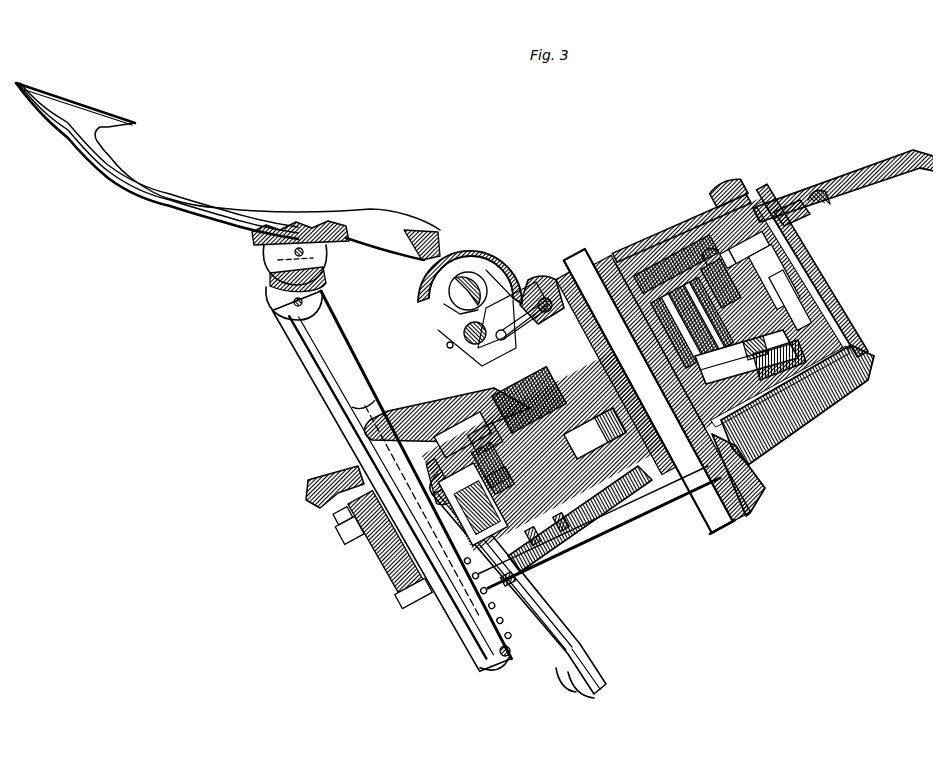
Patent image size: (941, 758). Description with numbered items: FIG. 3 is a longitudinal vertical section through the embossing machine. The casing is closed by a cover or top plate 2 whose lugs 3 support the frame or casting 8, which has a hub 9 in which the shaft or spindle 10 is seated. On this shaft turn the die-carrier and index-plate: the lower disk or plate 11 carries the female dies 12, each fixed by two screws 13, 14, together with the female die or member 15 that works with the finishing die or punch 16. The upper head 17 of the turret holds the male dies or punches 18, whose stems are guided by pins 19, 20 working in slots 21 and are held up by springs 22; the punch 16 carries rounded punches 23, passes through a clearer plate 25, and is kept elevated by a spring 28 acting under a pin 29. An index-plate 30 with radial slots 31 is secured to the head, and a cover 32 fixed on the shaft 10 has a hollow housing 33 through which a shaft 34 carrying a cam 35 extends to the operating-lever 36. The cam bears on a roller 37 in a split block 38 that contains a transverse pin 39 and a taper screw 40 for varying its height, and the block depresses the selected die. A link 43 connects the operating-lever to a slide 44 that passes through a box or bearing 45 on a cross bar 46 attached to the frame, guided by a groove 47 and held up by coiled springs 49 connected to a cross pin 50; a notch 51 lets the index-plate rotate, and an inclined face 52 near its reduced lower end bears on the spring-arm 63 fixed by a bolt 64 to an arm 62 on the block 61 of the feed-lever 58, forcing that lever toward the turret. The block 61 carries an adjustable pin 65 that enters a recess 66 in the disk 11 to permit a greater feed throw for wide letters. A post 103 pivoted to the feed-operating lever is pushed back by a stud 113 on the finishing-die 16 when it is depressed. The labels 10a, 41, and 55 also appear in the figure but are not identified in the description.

The cover or top plate 2 is at (908, 146).
The lugs 3 is at (822, 288).
The frame or casting 8 is at (800, 404).
The hub 9 is at (742, 486).
The shaft or spindle 10 is at (700, 524).
The block 10a is at (485, 438).
The disk or plate 11 is at (745, 364).
The female dies 12 is at (543, 451).
The screw 13 is at (570, 500).
The screw 14 is at (512, 466).
The female die or member 15 is at (778, 352).
The die or punch 16 is at (744, 276).
The upper portion or head of the turret 17 is at (720, 348).
The male dies or punches 18 is at (662, 254).
The pins 19 is at (461, 435).
The pins 20 is at (447, 406).
The slots or openings 21 is at (529, 400).
The springs 22 is at (610, 425).
The rounded pins or punches 23 is at (730, 328).
The plate 25 is at (760, 298).
The spring 28 is at (721, 283).
The pin 29 is at (700, 282).
The index-plate 30 is at (790, 192).
The radial slots 31 is at (380, 430).
The cover 32 is at (724, 206).
The hollow housing or projection 33 is at (462, 234).
The shaft 34 is at (470, 270).
The cam 35 is at (450, 304).
The operating-lever 36 is at (228, 171).
The roller 37 is at (440, 339).
The block 38 is at (534, 284).
The transversely-extending pin 39 is at (513, 315).
The taper pin or screw 40 is at (464, 336).
The cross member 41 is at (650, 389).
The link 43 is at (278, 258).
The slide 44 is at (332, 340).
The box or bearing 45 is at (392, 538).
The cross bar or member 46 is at (366, 522).
The groove or channel 47 is at (330, 398).
The coiled springs 49 is at (452, 612).
The cross bar or pin 50 is at (499, 650).
The recess or notch 51 is at (390, 400).
The inclined face 52 is at (424, 470).
The disc 55 is at (464, 299).
The feed-lever 58 is at (473, 498).
The downwardly-extending block 61 is at (464, 494).
The arm 62 is at (548, 626).
The spring-arm 63 is at (550, 654).
The bolt 64 is at (508, 572).
The adjustable pin 65 is at (537, 529).
The recess 66 is at (563, 516).
The post 103 is at (522, 546).
The pin or stud 113 is at (740, 254).